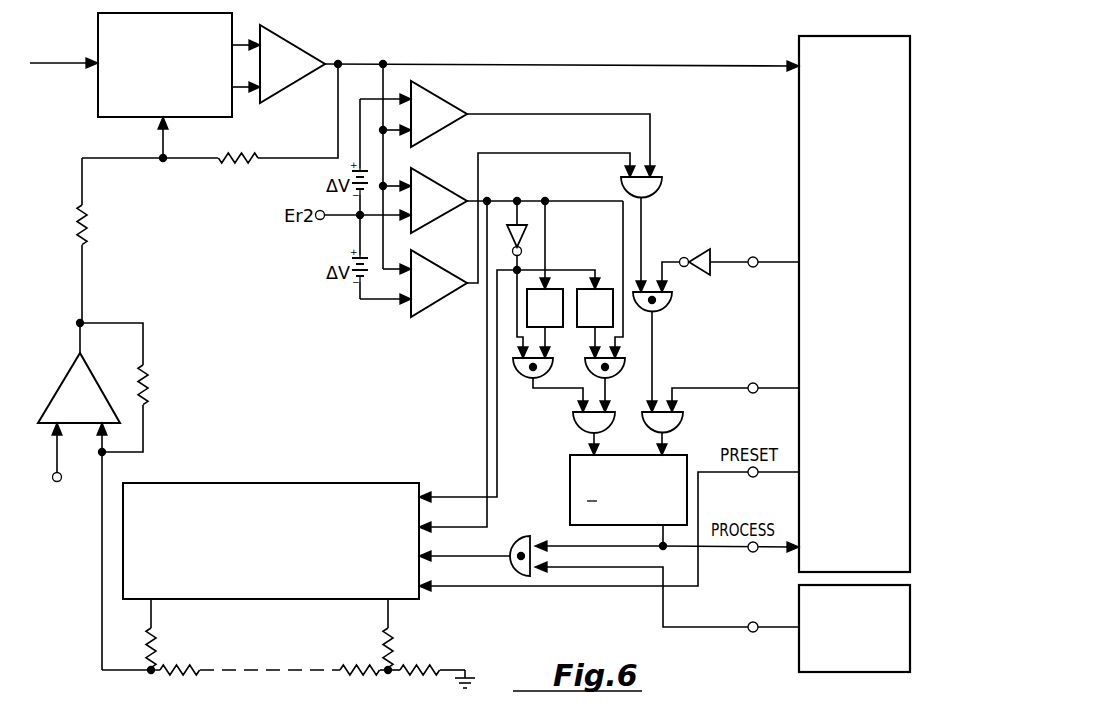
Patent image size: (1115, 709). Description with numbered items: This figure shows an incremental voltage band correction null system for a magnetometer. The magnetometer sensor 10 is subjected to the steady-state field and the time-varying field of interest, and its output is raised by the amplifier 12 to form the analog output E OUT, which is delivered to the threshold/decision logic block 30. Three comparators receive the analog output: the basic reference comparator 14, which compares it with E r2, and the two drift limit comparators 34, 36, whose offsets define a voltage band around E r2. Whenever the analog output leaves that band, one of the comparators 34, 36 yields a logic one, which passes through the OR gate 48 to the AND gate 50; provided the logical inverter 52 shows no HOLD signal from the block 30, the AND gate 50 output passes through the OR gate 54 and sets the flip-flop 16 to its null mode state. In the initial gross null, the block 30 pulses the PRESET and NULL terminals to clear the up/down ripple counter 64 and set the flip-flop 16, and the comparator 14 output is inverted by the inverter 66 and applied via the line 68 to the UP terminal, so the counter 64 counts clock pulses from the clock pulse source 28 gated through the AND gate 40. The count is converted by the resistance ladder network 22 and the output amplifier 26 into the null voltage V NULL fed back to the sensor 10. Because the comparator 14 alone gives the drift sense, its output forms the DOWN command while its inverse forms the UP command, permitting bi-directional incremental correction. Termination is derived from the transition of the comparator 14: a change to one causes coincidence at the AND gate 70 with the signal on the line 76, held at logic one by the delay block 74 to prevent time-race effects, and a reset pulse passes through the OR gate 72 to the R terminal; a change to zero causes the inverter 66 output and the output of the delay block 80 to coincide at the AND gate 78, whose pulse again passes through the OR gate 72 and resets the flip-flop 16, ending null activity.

The magnetometer sensor 10 is at (98, 100).
The amplifier 12 is at (292, 48).
The comparator 14 is at (437, 184).
The flip-flop 16 is at (570, 471).
The resistance ladder network 22 is at (282, 640).
The output amplifier 26 is at (64, 392).
The clock pulse source 28 is at (799, 654).
The threshold/decision logic block 30 is at (799, 116).
The drift limit comparator 34 is at (437, 268).
The drift limit comparator 36 is at (447, 105).
The AND gate 40 is at (521, 536).
The OR gate 48 is at (665, 188).
The AND gate 50 is at (674, 305).
The logical inverter 52 is at (697, 255).
The OR gate 54 is at (684, 423).
The up/down ripple counter 64 is at (289, 483).
The inverter 66 is at (525, 241).
The line 68 is at (497, 438).
The AND gate 70 is at (618, 374).
The OR gate 72 is at (611, 428).
The delay block 74 is at (600, 292).
The line 76 is at (593, 340).
The AND gate 78 is at (525, 373).
The delay block 80 is at (552, 290).